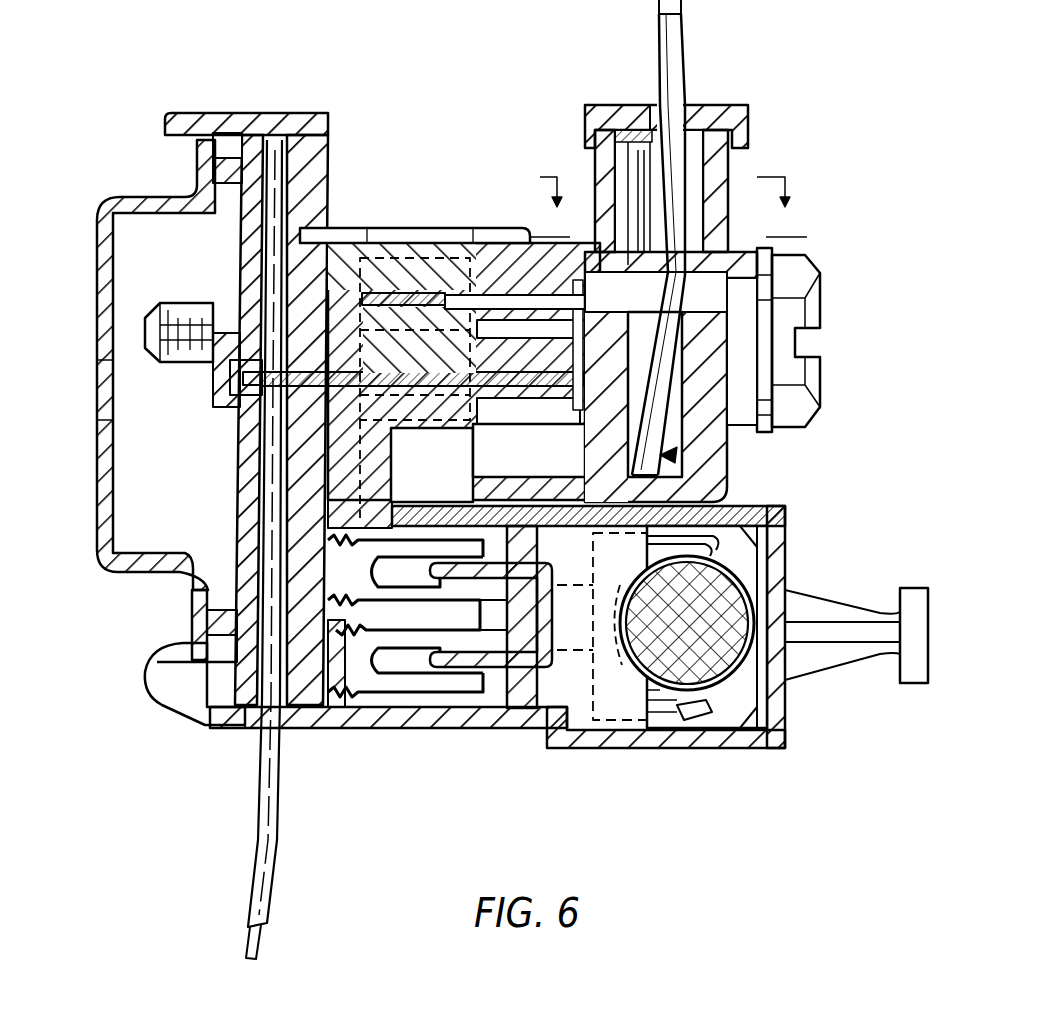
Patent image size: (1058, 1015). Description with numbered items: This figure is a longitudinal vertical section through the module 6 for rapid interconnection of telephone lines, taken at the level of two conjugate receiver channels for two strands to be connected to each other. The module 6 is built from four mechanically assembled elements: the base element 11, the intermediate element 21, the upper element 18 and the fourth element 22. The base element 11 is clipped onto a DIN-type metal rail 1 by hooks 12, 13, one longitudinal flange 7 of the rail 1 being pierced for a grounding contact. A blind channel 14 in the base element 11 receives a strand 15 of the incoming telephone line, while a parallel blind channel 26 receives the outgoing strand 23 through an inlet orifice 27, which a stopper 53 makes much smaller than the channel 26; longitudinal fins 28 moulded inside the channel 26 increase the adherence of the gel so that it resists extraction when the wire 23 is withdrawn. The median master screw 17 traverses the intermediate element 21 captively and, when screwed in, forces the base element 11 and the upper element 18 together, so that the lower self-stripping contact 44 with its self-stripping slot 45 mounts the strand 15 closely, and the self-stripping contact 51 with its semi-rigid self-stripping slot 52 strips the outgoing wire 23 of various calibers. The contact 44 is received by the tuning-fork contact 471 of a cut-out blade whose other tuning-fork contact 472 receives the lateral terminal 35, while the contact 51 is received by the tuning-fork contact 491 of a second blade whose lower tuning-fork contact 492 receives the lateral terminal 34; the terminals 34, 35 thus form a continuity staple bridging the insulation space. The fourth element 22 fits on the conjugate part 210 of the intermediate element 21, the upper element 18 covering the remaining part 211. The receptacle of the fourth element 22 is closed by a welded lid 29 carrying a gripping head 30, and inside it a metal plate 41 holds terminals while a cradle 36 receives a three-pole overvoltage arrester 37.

The metal rail 1 is at (100, 215).
The module 6 is at (825, 140).
The longitudinal flange 7 is at (195, 608).
The base element 11 is at (281, 98).
The hook 12 is at (197, 150).
The hook 13 is at (182, 653).
The blind channel 14 is at (240, 730).
The strand 15 is at (262, 866).
The master screw 17 is at (800, 408).
The upper element 18 is at (715, 443).
The intermediate element 21 is at (385, 228).
The fourth element 22 is at (632, 748).
The outgoing strand 23 is at (676, 28).
The receiver channel 26 is at (672, 455).
The inlet orifice 27 is at (647, 101).
The longitudinal fins 28 is at (643, 180).
The welded lid 29 is at (760, 733).
The head 30 is at (918, 685).
The lateral terminal 34 is at (440, 567).
The lateral terminal 35 is at (432, 660).
The cradle 36 is at (693, 712).
The three-pole overvoltage arrester 37 is at (700, 664).
The metal plate 41 is at (748, 562).
The lower self-stripping contact 44 is at (414, 390).
The self-stripping slot 45 is at (292, 392).
The self-stripping contact 51 is at (408, 293).
The self-stripping slot 52 is at (775, 313).
The stopper 53 is at (700, 110).
The conjugate part 210 is at (490, 708).
The remaining part 211 is at (505, 280).
The tuning-fork contact 471 is at (447, 433).
The tuning-fork contact 472 is at (403, 683).
The tuning-fork contact 491 is at (462, 268).
The tuning-fork contact 492 is at (340, 578).